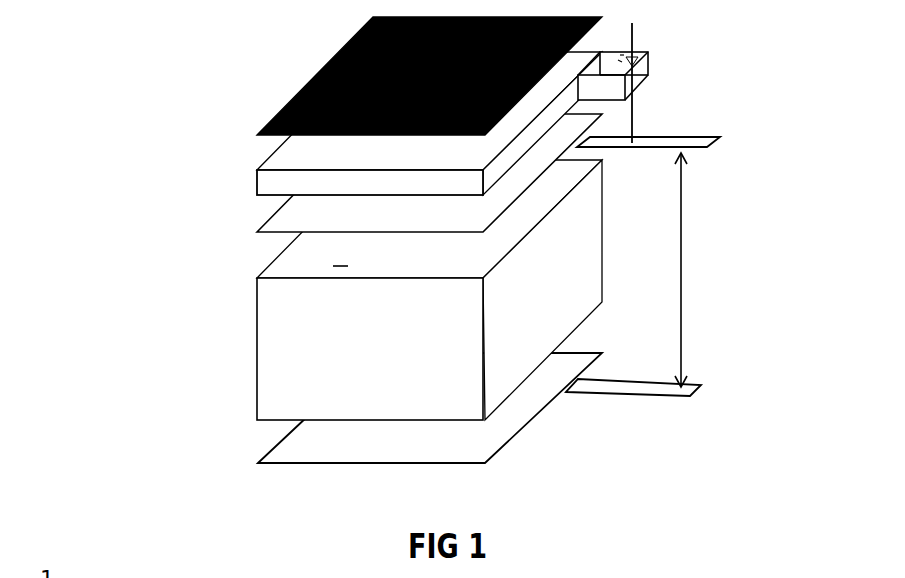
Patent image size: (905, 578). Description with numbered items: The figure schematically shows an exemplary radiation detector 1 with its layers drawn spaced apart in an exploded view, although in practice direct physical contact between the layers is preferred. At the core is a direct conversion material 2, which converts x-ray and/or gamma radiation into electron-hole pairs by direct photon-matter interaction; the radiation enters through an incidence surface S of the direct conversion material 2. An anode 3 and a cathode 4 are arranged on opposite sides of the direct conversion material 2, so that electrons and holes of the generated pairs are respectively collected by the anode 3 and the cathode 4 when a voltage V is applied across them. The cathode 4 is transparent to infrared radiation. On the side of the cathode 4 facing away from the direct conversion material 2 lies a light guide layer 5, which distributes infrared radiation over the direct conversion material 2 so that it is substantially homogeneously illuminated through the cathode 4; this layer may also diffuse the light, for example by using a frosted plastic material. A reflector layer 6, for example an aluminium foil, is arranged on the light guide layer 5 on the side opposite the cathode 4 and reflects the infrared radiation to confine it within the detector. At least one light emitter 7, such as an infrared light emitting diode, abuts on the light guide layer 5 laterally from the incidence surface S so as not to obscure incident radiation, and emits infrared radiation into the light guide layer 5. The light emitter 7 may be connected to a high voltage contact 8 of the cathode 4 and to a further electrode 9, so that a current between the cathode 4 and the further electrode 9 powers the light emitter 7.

The radiation detector 1 is at (122, 86).
The direct conversion material 2 is at (257, 338).
The anode 3 is at (270, 452).
The cathode 4 is at (268, 221).
The light guide layer 5 is at (257, 181).
The reflector layer 6 is at (317, 70).
The light emitter 7 is at (664, 70).
The high voltage contact 8 is at (709, 145).
The further electrode 9 is at (632, 35).